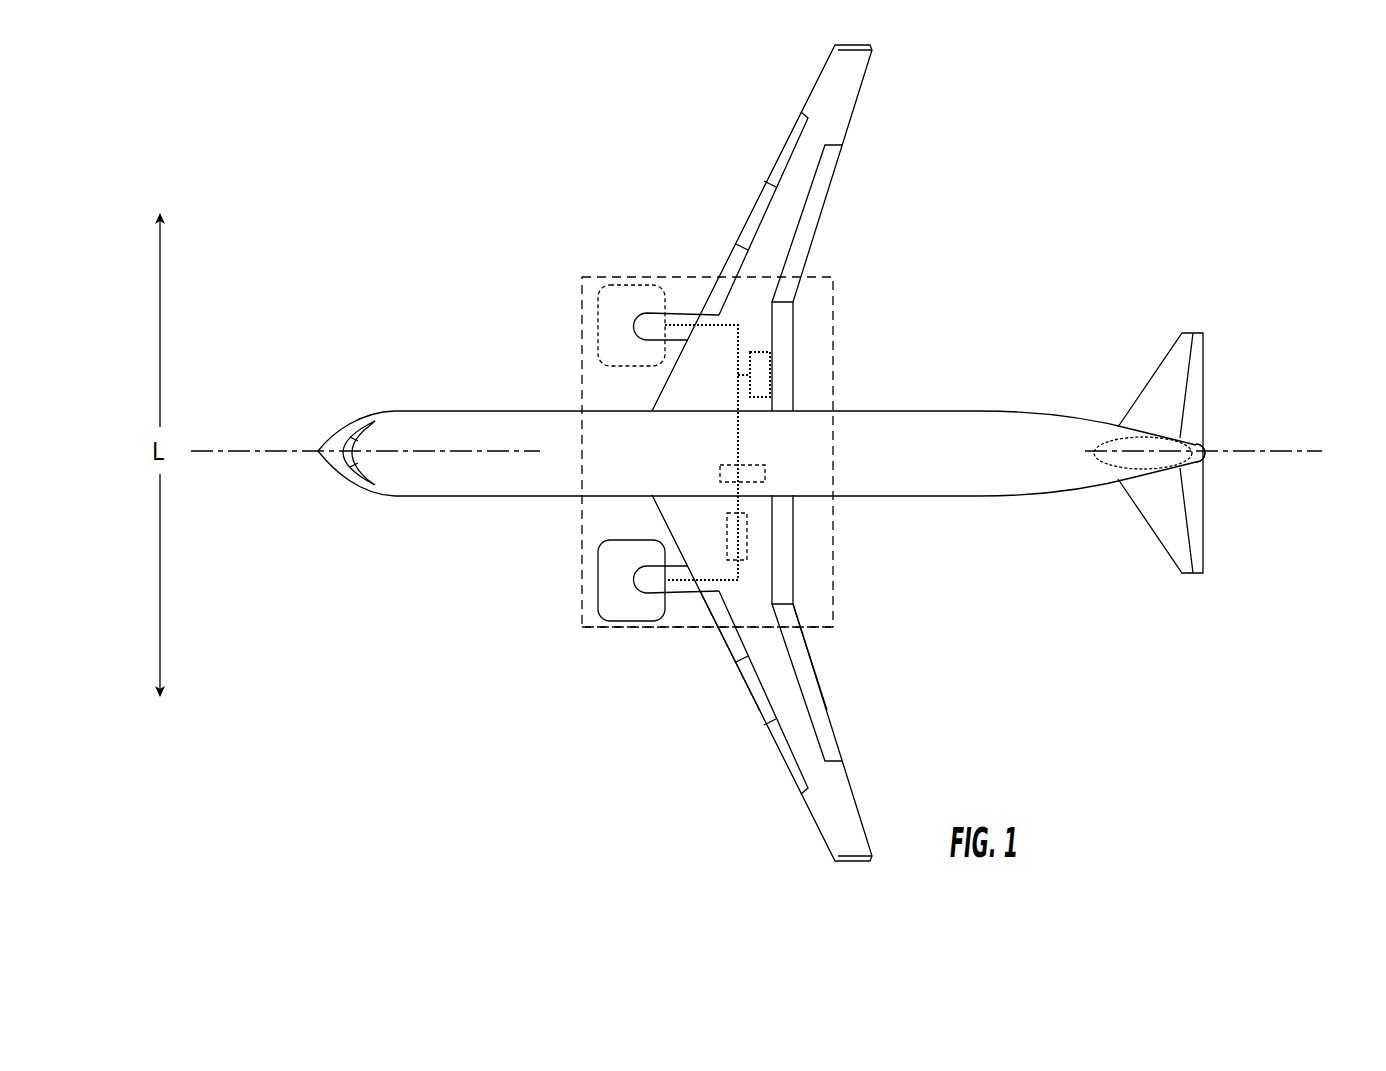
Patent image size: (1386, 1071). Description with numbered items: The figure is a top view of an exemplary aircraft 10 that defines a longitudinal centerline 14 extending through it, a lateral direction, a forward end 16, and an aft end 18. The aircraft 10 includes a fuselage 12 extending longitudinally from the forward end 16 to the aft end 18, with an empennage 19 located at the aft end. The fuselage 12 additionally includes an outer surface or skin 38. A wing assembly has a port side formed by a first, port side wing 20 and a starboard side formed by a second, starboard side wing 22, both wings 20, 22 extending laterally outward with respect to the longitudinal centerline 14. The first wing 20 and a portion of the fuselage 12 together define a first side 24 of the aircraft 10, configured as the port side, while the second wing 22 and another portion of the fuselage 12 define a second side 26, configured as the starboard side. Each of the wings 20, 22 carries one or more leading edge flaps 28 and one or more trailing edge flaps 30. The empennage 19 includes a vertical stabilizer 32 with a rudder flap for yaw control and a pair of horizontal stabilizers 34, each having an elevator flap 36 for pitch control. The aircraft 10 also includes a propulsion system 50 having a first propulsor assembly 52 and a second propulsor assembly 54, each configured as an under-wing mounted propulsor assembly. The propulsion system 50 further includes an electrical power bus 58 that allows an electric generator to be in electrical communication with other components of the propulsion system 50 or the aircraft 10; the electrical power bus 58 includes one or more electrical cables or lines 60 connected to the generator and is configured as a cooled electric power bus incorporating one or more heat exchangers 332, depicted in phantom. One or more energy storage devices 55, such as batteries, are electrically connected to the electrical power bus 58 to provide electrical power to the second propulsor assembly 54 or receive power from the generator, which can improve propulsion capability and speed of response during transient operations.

The aircraft 10 is at (1001, 158).
The fuselage 12 is at (396, 478).
The longitudinal centerline 14 is at (252, 453).
The forward end 16 is at (313, 495).
The aft end 18 is at (1151, 565).
The empennage 19 is at (1247, 408).
The first port side wing 20 is at (802, 740).
The second starboard side wing 22 is at (845, 98).
The first side 24 is at (632, 657).
The second side 26 is at (580, 250).
The leading edge flap 28 is at (758, 693).
The trailing edge flap 30 is at (827, 705).
The vertical stabilizer 32 is at (1205, 461).
The horizontal stabilizer 34 is at (1168, 360).
The elevator flap 36 is at (1190, 373).
The outer surface or skin 38 is at (950, 459).
The propulsion system 50 is at (803, 436).
The first propulsor assembly 52 is at (620, 597).
The second propulsor assembly 54 is at (697, 303).
The energy storage device 55 is at (770, 385).
The electrical power bus 58 is at (758, 340).
The electrical cables or lines 60 is at (760, 465).
The heat exchanger 332 is at (765, 473).